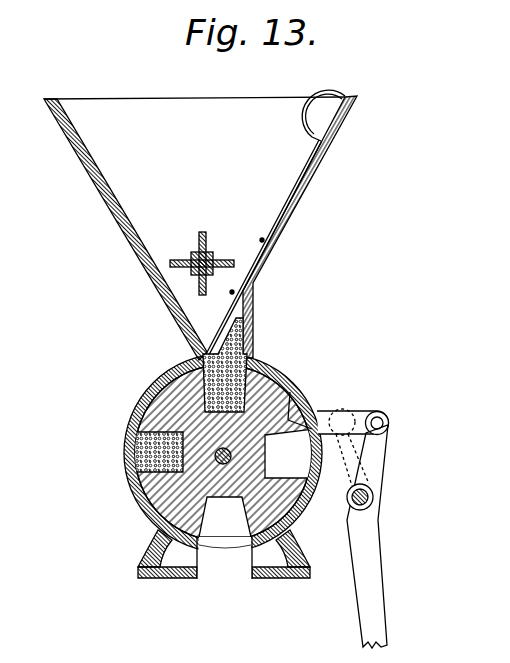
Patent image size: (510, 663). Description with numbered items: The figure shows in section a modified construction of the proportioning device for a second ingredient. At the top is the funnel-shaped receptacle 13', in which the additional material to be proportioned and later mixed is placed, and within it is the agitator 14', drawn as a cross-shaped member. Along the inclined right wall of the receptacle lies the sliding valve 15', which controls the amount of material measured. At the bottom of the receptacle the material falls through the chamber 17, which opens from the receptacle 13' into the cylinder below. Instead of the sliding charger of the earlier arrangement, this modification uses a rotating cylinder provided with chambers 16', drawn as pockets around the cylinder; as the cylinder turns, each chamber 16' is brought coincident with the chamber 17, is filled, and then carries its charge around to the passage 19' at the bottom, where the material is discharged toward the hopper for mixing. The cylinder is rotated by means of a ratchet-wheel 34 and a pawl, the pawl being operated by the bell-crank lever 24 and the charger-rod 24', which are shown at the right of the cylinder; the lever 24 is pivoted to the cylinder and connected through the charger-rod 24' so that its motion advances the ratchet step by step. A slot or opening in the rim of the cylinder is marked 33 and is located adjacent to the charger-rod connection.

The receptacle 13' is at (200, 228).
The sliding valve 15' is at (274, 224).
The agitator 14' is at (207, 262).
The chamber 17 is at (234, 327).
The slot in drum rim 33 is at (294, 398).
The ratchet-wheel 34 is at (148, 426).
The chambers 16' is at (264, 482).
The passage 19' is at (224, 558).
The charger-rod 24' is at (353, 409).
The bell-crank lever 24 is at (376, 536).